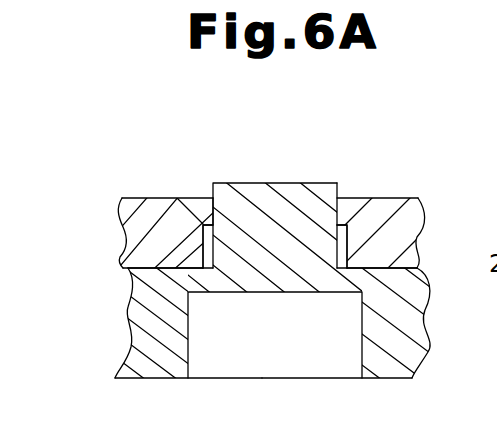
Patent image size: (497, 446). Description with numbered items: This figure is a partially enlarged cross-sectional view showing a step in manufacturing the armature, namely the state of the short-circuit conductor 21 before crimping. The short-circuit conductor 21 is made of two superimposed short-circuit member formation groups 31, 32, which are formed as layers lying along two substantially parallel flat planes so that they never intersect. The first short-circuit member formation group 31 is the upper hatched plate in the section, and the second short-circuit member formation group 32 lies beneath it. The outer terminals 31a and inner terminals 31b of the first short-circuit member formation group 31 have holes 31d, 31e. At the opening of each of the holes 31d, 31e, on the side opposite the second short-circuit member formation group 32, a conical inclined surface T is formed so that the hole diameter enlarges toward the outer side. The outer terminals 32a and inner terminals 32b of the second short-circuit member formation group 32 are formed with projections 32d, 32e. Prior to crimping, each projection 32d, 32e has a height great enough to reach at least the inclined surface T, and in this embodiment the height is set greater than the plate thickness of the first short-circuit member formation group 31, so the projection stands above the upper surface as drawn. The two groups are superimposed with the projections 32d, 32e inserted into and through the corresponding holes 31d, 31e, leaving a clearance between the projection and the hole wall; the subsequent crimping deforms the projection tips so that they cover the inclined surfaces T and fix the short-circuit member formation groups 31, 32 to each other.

The short-circuit conductor 21 is at (70, 215).
The first short-circuit member formation group 31 is at (126, 229).
The second short-circuit member formation group 32 is at (132, 302).
The outer terminal 31a is at (153, 206).
The inner terminal 31b is at (280, 172).
The hole 31d is at (341, 231).
The hole 31e is at (327, 203).
The projection 32d is at (283, 190).
The projection 32e is at (293, 188).
The outer terminal 32a is at (148, 378).
The inner terminal 32b is at (286, 403).
The inclined surface T is at (347, 226).